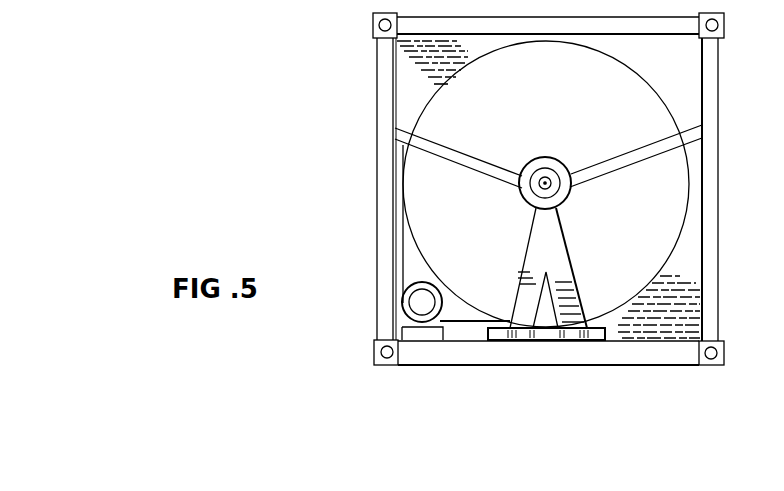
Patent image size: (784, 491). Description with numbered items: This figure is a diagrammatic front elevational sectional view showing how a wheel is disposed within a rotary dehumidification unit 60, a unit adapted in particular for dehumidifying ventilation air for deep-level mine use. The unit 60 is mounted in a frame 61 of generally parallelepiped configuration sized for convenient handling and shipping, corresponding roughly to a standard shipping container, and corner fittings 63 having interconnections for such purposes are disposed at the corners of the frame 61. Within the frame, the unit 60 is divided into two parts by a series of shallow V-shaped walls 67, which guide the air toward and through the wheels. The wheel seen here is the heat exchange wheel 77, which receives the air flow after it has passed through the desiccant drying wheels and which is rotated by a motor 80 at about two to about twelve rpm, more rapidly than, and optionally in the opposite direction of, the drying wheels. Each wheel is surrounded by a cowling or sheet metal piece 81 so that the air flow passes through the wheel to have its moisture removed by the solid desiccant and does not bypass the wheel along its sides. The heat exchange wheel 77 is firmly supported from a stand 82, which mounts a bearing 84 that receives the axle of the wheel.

The rotary dehumidification unit 60 is at (538, 183).
The frame 61 is at (720, 176).
The corner fittings 63 is at (317, 0).
The shallow V-shaped walls 67 is at (483, 158).
The heat exchange wheel 77 is at (536, 274).
The motor 80 is at (402, 306).
The cowling or sheet metal piece 81 is at (397, 122).
The stands 82 is at (578, 287).
The bearings 84 is at (530, 200).